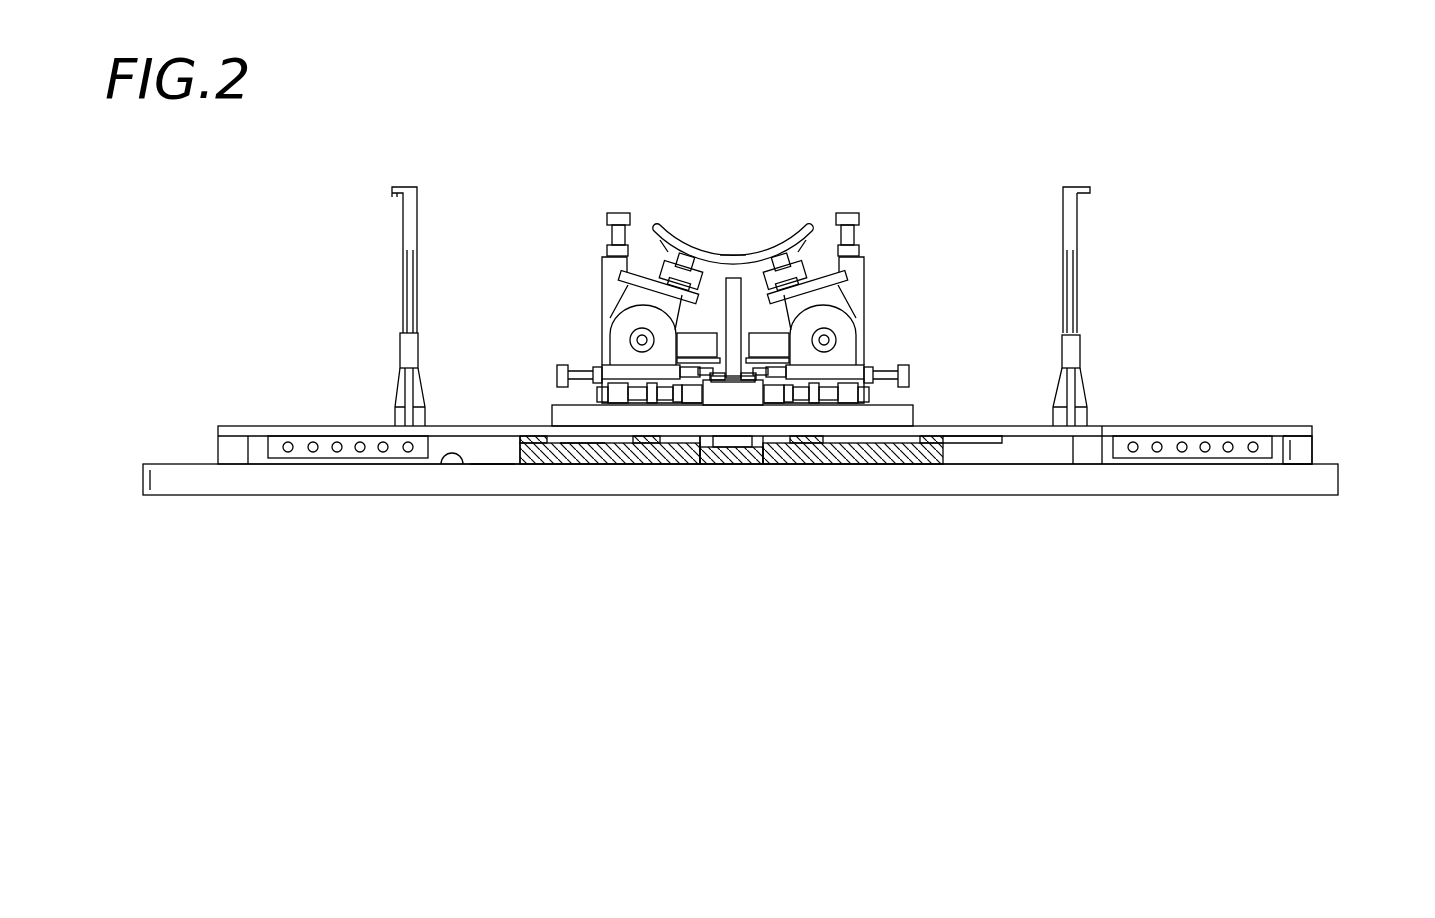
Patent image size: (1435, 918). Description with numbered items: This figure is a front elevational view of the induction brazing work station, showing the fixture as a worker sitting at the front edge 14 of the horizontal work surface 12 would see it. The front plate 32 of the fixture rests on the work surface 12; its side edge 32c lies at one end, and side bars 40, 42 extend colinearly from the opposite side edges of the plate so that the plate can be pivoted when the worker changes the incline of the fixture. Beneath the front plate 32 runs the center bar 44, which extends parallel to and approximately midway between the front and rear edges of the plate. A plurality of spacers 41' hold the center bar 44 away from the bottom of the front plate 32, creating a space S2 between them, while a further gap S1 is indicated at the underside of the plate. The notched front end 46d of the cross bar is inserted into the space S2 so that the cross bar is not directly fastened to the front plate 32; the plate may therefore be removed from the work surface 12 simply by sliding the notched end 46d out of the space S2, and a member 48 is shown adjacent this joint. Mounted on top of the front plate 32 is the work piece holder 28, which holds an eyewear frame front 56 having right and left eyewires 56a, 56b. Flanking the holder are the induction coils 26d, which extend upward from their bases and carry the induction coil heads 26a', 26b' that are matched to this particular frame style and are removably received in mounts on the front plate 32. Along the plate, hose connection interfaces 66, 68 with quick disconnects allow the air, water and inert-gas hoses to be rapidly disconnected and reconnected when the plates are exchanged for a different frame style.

The work surface 12 is at (463, 464).
The front edge 14 is at (862, 480).
The induction coil head 26a' is at (345, 354).
The induction coil head 26b' is at (1136, 359).
The induction coil 26d is at (418, 203).
The work piece holder 28 is at (759, 195).
The front plate 32 is at (480, 428).
The side edge 32c is at (1312, 428).
The side bar 40 is at (236, 455).
The spacer pad 41' is at (758, 470).
The side bar 42 is at (1302, 448).
The center bar 44 is at (657, 443).
The front end of the cross bar 46d is at (727, 445).
The insert 48 is at (750, 453).
The eyewear frame front 56 is at (738, 258).
The right eyewire 56a is at (662, 230).
The left eyewire 56b is at (797, 228).
The hose connection interface 66 is at (1192, 440).
The hose connection interface 68 is at (328, 437).
The first surface S1 is at (492, 470).
The space S2 is at (580, 452).